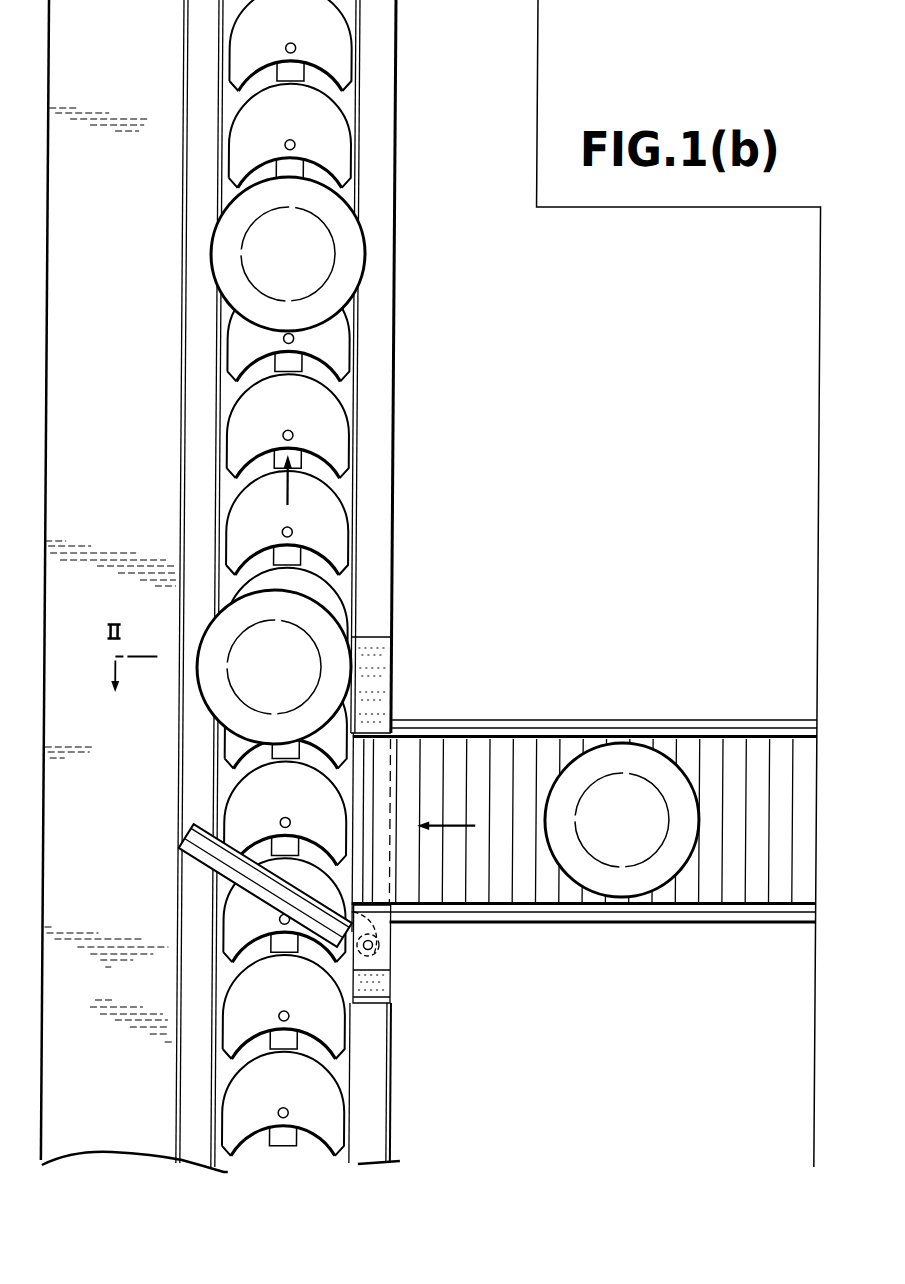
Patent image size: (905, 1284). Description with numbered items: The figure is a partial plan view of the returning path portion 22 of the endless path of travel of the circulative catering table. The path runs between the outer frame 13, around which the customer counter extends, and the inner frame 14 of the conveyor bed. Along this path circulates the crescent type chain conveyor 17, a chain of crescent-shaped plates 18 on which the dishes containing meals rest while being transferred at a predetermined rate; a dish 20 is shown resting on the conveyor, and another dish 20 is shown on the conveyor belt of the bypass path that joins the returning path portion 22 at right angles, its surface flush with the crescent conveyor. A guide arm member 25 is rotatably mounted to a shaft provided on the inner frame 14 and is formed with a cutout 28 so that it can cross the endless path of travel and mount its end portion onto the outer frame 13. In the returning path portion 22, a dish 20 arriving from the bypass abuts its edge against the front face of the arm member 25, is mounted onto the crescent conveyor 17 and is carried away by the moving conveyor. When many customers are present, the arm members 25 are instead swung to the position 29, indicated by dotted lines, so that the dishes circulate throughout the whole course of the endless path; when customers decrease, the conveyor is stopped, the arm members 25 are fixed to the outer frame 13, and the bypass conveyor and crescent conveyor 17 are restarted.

The outer frame 13 is at (192, 347).
The inner frame 14 is at (383, 364).
The crescent type chain conveyor 17 is at (355, 117).
The crescent-shaped plate 18 is at (344, 144).
The dish 20 is at (322, 255).
The returning path portion 22 is at (211, 529).
The guide arm member 25 is at (273, 905).
The cutout 28 is at (203, 869).
The position 29 is at (392, 775).